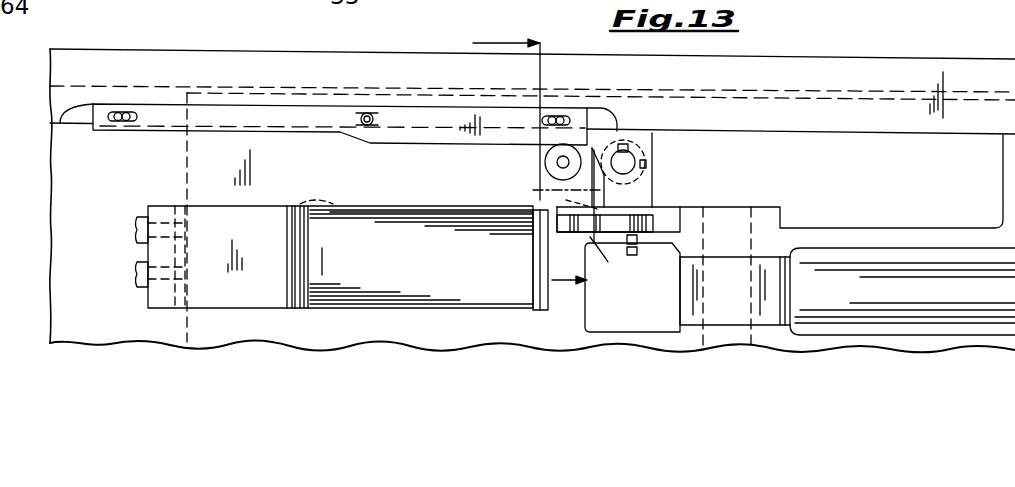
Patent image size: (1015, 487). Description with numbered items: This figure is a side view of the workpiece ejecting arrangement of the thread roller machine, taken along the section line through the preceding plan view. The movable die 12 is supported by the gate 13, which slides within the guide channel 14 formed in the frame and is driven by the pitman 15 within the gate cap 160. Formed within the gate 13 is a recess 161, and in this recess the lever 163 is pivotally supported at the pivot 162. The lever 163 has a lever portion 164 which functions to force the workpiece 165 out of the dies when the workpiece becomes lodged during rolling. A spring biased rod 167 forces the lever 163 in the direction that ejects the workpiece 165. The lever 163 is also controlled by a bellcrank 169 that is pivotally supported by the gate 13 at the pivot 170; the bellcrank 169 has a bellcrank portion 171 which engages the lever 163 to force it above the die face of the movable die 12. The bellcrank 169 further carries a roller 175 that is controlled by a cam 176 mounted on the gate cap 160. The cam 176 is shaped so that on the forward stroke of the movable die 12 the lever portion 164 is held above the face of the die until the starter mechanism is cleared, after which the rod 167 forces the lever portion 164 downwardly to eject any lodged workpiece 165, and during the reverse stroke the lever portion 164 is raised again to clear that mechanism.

The movable die 12 is at (410, 216).
The gate 13 is at (215, 165).
The guide channel 14 is at (44, 173).
The pitman 15 is at (915, 285).
The gate cap 160 is at (803, 70).
The recess 161 is at (660, 153).
The pivot 162 is at (628, 256).
The lever 163 is at (653, 217).
The lever portion 164 is at (563, 228).
The workpiece 165 is at (323, 250).
The spring biased rod 167 is at (615, 260).
The bellcrank 169 is at (596, 150).
The bellcrank pivot 170 is at (627, 170).
The bellcrank portion 171 is at (600, 222).
The roller 175 is at (545, 163).
The cam 176 is at (407, 146).